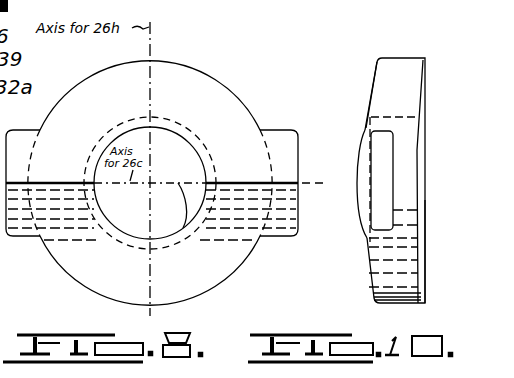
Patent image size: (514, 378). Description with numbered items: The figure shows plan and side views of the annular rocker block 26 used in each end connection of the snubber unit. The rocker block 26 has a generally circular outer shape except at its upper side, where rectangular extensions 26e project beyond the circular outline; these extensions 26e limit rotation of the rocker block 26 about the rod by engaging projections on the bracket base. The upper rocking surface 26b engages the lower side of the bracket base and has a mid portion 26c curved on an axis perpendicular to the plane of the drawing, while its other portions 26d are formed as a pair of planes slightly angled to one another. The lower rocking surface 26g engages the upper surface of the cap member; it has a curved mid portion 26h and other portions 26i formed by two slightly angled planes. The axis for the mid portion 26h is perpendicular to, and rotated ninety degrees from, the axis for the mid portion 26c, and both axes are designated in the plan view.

In FIG. 8, the rocker block 26 is at (234, 91).
In FIG. 10, the rocker block 26 is at (400, 58).
In FIG. 8, the upper rocking surface 26b is at (161, 78).
In FIG. 10, the upper rocking surface 26b is at (373, 78).
In FIG. 8, the mid portion of upper surface 26c is at (58, 181).
In FIG. 10, the mid portion of upper surface 26c is at (358, 182).
In FIG. 8, the other portions of upper surface 26d is at (199, 128).
In FIG. 10, the other portions of upper surface 26d is at (368, 106).
In FIG. 8, the rectangular extensions 26e is at (278, 130).
In FIG. 10, the rectangular extensions 26e is at (368, 158).
In FIG. 10, the lower rocking surface 26g is at (421, 223).
In FIG. 10, the mid portion of lower surface 26h is at (421, 117).
In FIG. 10, the other portions of lower surface 26i is at (419, 160).